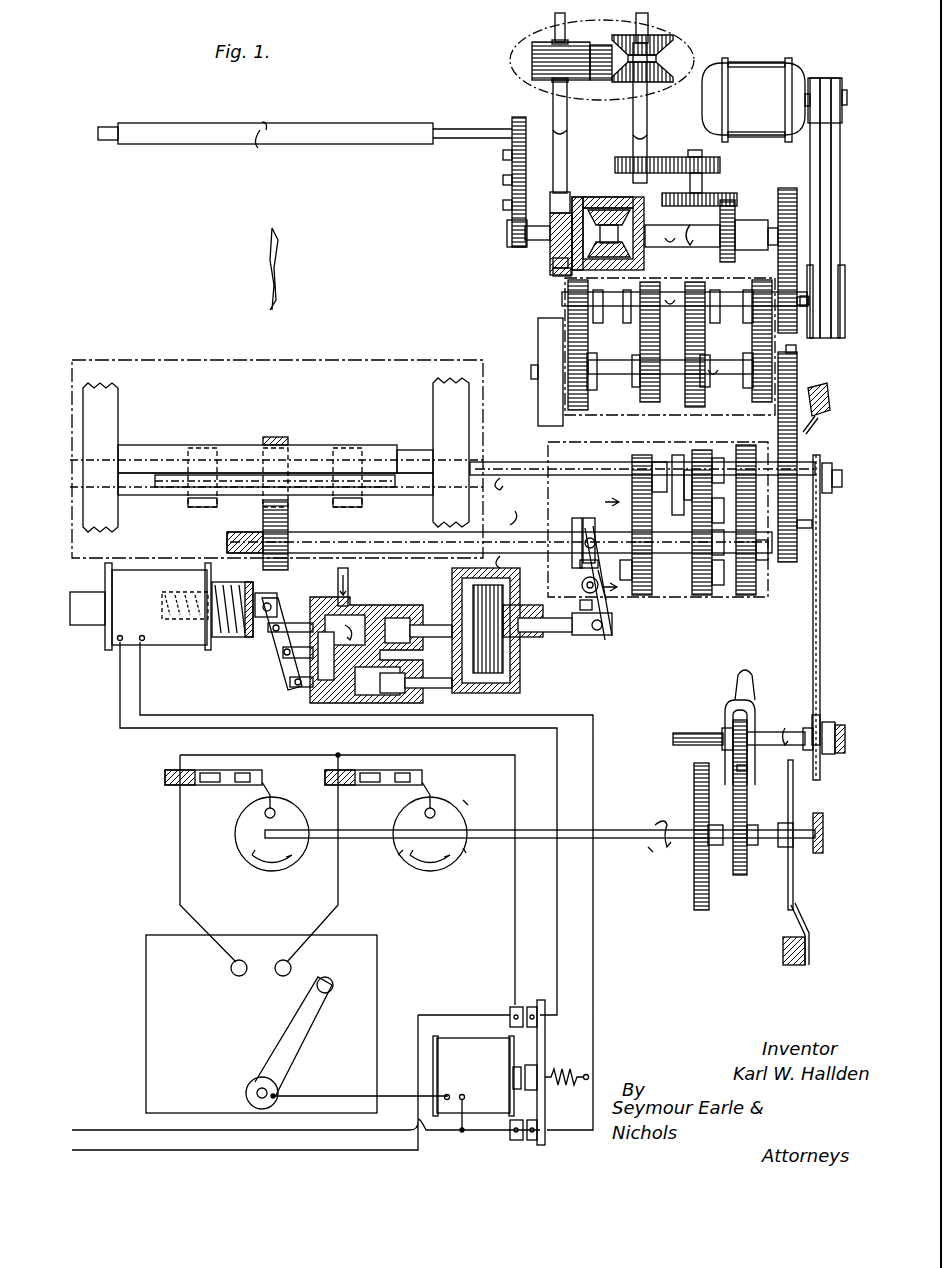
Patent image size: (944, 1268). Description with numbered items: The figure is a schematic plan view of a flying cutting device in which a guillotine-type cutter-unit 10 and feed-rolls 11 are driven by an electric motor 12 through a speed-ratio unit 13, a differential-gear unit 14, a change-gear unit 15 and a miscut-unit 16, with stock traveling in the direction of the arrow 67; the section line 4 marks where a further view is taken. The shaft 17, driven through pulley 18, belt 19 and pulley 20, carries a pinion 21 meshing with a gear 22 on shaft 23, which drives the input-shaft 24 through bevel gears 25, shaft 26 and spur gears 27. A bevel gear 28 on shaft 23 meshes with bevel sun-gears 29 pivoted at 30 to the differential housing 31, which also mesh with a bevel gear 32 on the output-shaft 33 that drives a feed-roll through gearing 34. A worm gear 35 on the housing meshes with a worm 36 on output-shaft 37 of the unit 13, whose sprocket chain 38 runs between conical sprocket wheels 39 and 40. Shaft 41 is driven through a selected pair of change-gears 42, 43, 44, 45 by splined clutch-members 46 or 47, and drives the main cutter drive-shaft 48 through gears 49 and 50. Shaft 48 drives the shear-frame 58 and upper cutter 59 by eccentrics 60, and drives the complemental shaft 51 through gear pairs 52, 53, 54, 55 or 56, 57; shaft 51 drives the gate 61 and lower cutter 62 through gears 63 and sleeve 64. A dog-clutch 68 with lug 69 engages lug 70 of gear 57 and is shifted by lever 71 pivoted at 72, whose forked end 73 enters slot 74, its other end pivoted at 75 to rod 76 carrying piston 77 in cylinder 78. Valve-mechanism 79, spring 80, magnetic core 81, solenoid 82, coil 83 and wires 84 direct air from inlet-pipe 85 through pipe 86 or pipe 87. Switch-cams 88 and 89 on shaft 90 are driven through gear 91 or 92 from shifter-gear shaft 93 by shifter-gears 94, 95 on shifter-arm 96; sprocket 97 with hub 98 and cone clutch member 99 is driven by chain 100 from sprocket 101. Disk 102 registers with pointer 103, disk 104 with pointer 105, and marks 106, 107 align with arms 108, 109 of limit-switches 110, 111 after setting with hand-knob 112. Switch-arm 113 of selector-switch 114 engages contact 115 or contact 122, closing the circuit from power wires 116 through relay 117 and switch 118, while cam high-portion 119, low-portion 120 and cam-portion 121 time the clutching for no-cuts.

The cutter-unit 10 is at (392, 360).
The feed-rolls 11 is at (327, 146).
The electric motor 12 is at (778, 62).
The infinitesimally-adjustable speed-ratio unit 13 is at (510, 45).
The differential-gear unit 14 is at (592, 197).
The change-gear unit 15 is at (613, 415).
The miscut-unit 16 is at (681, 598).
The shaft 17 is at (797, 335).
The pulley 18 is at (842, 78).
The belt 19 is at (803, 150).
The pulley 20 is at (841, 336).
The pinion 21 is at (804, 343).
The gear 22 is at (794, 188).
The shaft 23 is at (748, 222).
The input-shaft 24 is at (647, 128).
The bevel gears 25 is at (737, 200).
The shaft 26 is at (702, 184).
The spur gears 27 is at (656, 158).
The bevel gear 28 is at (645, 228).
The bevel sun-gears 29 is at (630, 258).
The pivot 30 is at (582, 270).
The differential housing 31 is at (645, 200).
The bevel gear 32 is at (587, 198).
The differential output-shaft 33 is at (540, 217).
The gearing 34 is at (496, 163).
The worm gear 35 is at (553, 275).
The worm 36 is at (553, 262).
The output-shaft 37 is at (567, 132).
The sprocket chain 38 is at (600, 46).
The conical sprocket wheels 39 is at (673, 62).
The conical sprocket wheels 40 is at (532, 70).
The shaft 41 is at (668, 373).
The change-gears 42 is at (754, 328).
The change-gears 43 is at (690, 337).
The change-gears 44 is at (648, 335).
The change-gears 45 is at (538, 338).
The splined clutch-member 46 is at (722, 258).
The splined clutch-member 47 is at (603, 338).
The main cutter drive-shaft 48 is at (530, 470).
The gear 49 is at (800, 352).
The gear 50 is at (788, 562).
The complemental cutter drive-shaft 51 is at (530, 530).
The gear 52 is at (742, 446).
The gear 53 is at (752, 580).
The clutch-gear 54 is at (703, 450).
The clutch-gear 55 is at (716, 585).
The gear 56 is at (647, 452).
The gear 57 is at (645, 587).
The shear-frame 58 is at (405, 447).
The upper cutter 59 is at (167, 462).
The eccentrics 60 is at (420, 447).
The gate 61 is at (383, 495).
The lower cutter 62 is at (177, 487).
The gears 63 is at (263, 513).
The sleeve 64 is at (233, 445).
The arrow 67 is at (278, 276).
The dog-clutch 68 is at (578, 537).
The clutch-lug 69 is at (583, 590).
The clutch-lug 70 is at (608, 530).
The lever 71 is at (580, 605).
The pivot 72 is at (600, 590).
The forked end 73 is at (580, 568).
The annular slot 74 is at (576, 525).
The pivot 75 is at (598, 633).
The rod 76 is at (570, 632).
The piston 77 is at (517, 657).
The cylinder 78 is at (455, 590).
The valve-mechanism 79 is at (373, 608).
The spring 80 is at (230, 630).
The magnetic core 81 is at (73, 627).
The solenoid 82 is at (170, 645).
The coil 83 is at (197, 645).
The wires 84 is at (593, 988).
The inlet-pipe 85 is at (337, 580).
The pipe 86 is at (422, 627).
The pipe 87 is at (432, 685).
The switch-cam 88 is at (428, 870).
The switch-cam 89 is at (272, 868).
The switch-cam shaft 90 is at (618, 838).
The gear 91 is at (738, 875).
The gear 92 is at (701, 910).
The shifter-gear shaft 93 is at (778, 732).
The shifter-gear 94 is at (727, 726).
The shifter-gear 95 is at (750, 774).
The shifter-arm 96 is at (752, 707).
The sprocket 97 is at (813, 720).
The hub 98 is at (827, 722).
The cone friction-clutch member 99 is at (841, 756).
The chain 100 is at (813, 657).
The sprocket 101 is at (820, 512).
The disk 102 is at (800, 525).
The pointer 103 is at (807, 432).
The disk 104 is at (795, 885).
The pointer 105 is at (807, 910).
The mark 106 is at (436, 802).
The mark 107 is at (275, 802).
The contacting arm 108 is at (437, 790).
The contacting arm 109 is at (273, 790).
The limit-switch 110 is at (381, 788).
The limit-switch 111 is at (221, 788).
The hand-knob 112 is at (824, 848).
The switch-arm 113 is at (280, 1050).
The selector-switch 114 is at (146, 1020).
The contact 115 is at (283, 982).
The power wires 116 is at (420, 1148).
The relay 117 is at (475, 1038).
The switch 118 is at (548, 1060).
The cam high-portion 119 is at (468, 806).
The cam low-portion 120 is at (397, 855).
The cam-portion 121 is at (467, 850).
The contact 122 is at (238, 982).
The section line 4 is at (617, 546).